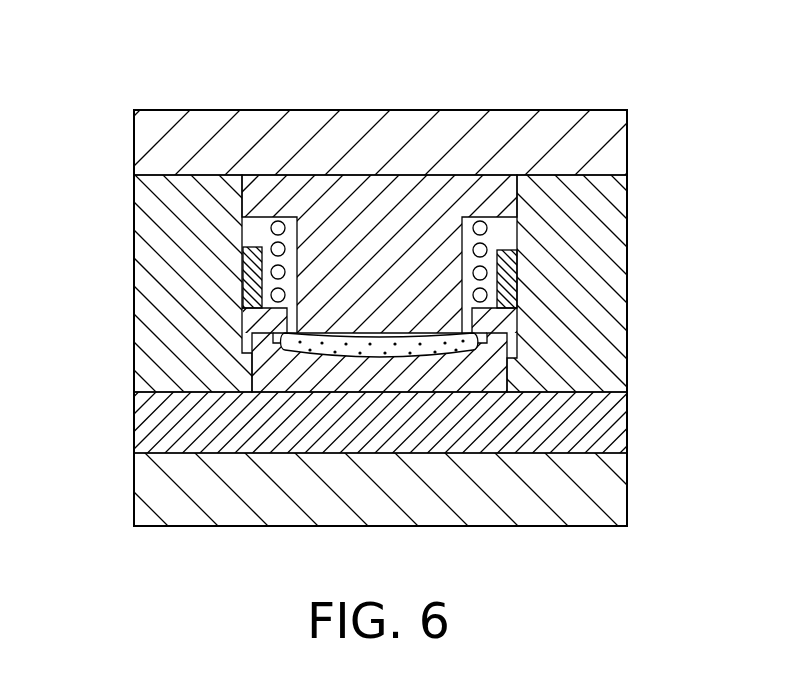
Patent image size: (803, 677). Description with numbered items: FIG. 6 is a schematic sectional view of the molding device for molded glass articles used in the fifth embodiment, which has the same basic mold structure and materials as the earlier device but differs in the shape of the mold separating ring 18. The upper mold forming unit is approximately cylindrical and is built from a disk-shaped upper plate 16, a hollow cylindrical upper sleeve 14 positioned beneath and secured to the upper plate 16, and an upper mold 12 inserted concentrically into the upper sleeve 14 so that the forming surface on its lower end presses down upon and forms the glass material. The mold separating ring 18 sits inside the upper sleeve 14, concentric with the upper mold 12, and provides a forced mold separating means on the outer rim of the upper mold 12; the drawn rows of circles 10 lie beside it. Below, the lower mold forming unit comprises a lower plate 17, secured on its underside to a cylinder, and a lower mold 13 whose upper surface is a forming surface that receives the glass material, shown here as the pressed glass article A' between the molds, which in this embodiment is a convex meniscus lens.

The heating elements 10 is at (270, 247).
The upper mold 12 is at (362, 210).
The lower mold 13 is at (197, 423).
The upper sleeve 14 is at (183, 195).
The upper plate 16 is at (465, 137).
The lower plate 17 is at (237, 480).
The mold separating ring 18 is at (262, 310).
The molded workpiece A' is at (500, 377).